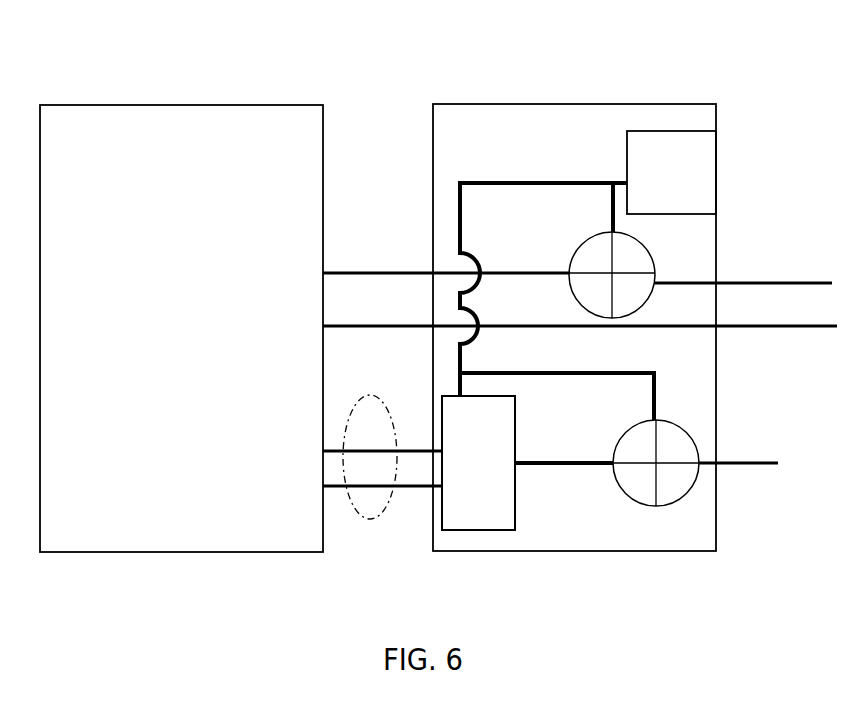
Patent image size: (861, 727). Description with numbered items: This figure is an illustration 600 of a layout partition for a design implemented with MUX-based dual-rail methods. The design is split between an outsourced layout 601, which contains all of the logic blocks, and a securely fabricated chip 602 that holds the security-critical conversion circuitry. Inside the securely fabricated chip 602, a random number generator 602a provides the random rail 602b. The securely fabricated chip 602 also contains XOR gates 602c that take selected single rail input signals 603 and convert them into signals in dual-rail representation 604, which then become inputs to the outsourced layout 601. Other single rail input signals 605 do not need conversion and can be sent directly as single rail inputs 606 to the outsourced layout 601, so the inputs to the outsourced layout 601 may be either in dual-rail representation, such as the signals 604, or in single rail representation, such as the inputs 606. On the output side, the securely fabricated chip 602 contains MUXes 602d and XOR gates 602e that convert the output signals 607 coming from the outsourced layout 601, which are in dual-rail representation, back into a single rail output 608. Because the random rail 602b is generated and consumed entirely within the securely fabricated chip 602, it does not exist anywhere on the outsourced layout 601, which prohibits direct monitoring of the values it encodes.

The illustration of the layout partition 600 is at (438, 308).
The outsourced layout 601 is at (181, 350).
The securely fabricated chip 602 is at (574, 349).
The random number generator 602a is at (671, 172).
The random rail 602b is at (557, 288).
The XOR gates 602c is at (598, 275).
The MUXes 602d is at (527, 463).
The XOR gates 602e is at (656, 473).
The single rail input signals 603 is at (743, 272).
The signals in dual-rail representation 604 is at (325, 252).
The single rail input signals 605 is at (776, 315).
The single rail inputs 606 is at (519, 313).
The output signals 607 is at (382, 457).
The single rail output 608 is at (756, 450).